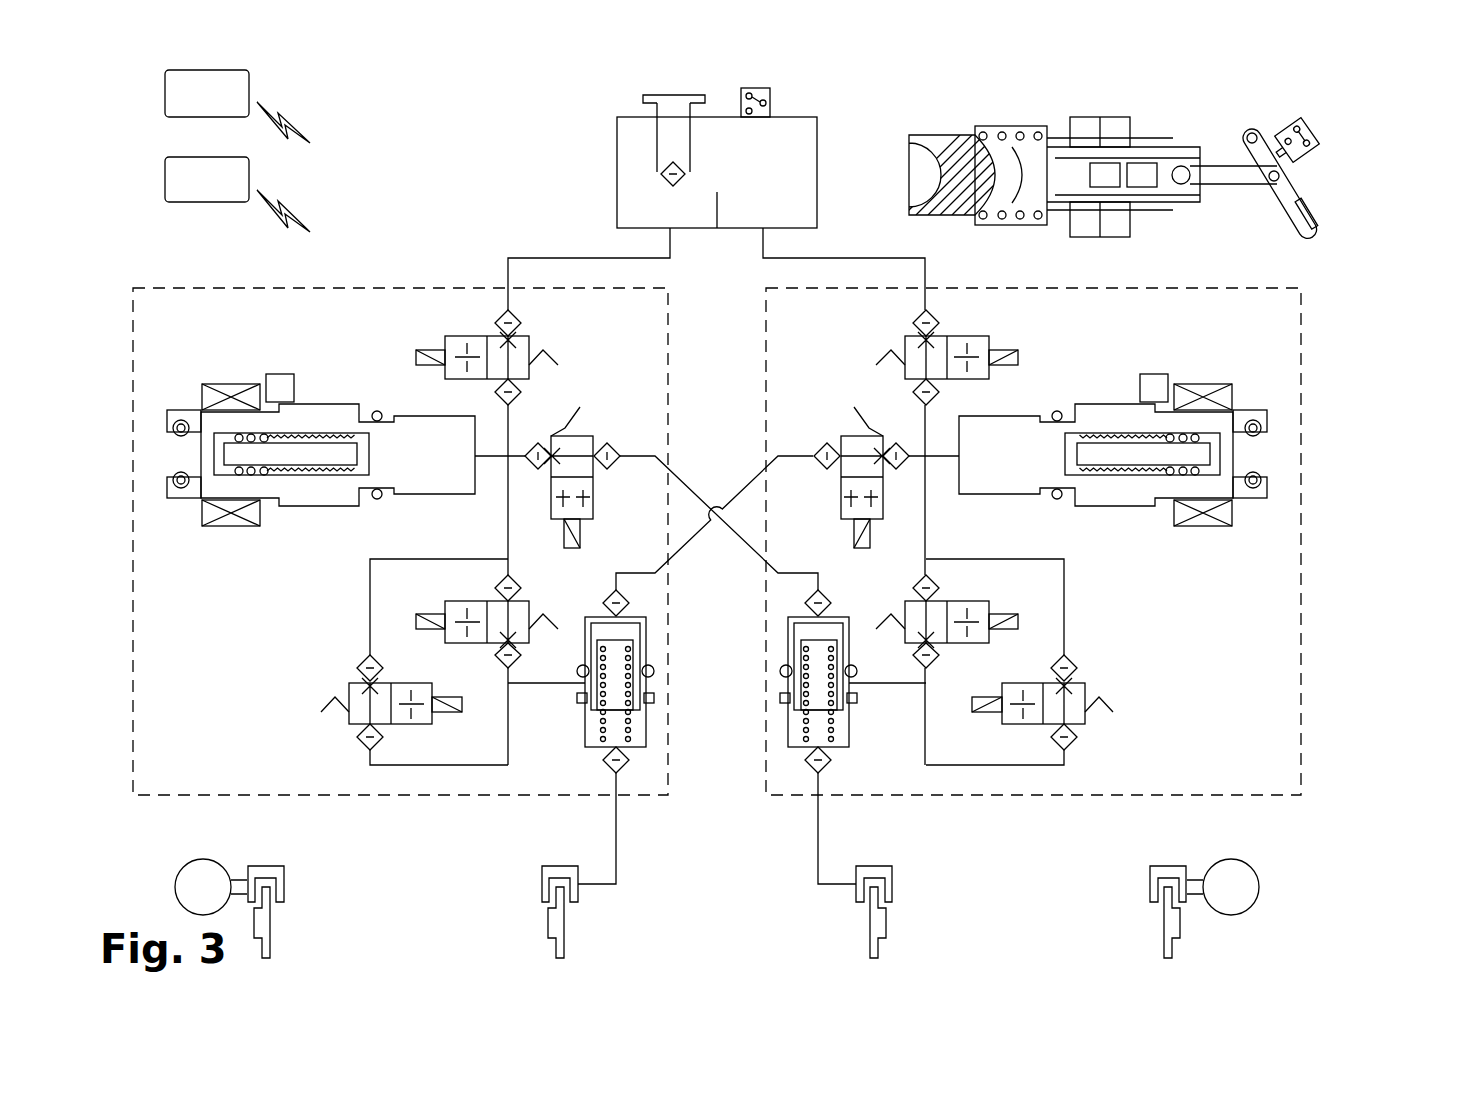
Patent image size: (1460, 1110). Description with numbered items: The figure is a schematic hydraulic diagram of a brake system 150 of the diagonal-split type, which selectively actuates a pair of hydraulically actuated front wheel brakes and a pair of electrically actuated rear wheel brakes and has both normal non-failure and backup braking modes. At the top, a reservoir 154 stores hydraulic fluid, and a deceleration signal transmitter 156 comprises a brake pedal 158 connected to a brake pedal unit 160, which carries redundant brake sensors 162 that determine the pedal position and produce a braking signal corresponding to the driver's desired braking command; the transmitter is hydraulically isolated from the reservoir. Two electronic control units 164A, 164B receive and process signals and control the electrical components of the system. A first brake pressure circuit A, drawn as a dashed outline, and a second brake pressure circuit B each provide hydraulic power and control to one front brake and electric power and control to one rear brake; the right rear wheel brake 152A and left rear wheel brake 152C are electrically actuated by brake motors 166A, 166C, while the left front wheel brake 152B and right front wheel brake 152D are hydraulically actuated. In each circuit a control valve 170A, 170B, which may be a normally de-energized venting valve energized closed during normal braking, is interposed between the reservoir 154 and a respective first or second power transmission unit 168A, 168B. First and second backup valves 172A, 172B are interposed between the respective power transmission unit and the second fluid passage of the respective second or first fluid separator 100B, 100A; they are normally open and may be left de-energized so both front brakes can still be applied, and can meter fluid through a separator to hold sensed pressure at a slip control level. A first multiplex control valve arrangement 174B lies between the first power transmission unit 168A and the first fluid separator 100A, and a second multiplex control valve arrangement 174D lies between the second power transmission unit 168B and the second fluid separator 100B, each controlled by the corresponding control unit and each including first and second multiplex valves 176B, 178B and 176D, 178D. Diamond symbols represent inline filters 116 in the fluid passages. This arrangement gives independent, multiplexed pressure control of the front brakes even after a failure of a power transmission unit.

The first fluid separator 100A is at (643, 800).
The second fluid separator 100B is at (791, 800).
The inline filter 116 is at (629, 603).
The brake system 150 is at (1162, 164).
The right rear wheel brake 152A is at (248, 866).
The left front wheel brake 152B is at (541, 878).
The left rear wheel brake 152C is at (1188, 868).
The right front wheel brake 152D is at (895, 870).
The reservoir 154 is at (803, 100).
The deceleration signal transmitter 156 is at (1056, 146).
The brake pedal 158 is at (1332, 216).
The brake pedal unit 160 is at (1220, 215).
The brake sensor 162 is at (1115, 117).
The first electronic control unit 164A is at (238, 104).
The second electronic control unit 164B is at (238, 190).
The brake motor 166A is at (178, 868).
The brake motor 166C is at (1259, 893).
The first power transmission unit 168A is at (174, 384).
The second power transmission unit 168B is at (1260, 384).
The first control valve 170A is at (530, 345).
The second control valve 170B is at (992, 345).
The first backup valve 172A is at (577, 436).
The second backup valve 172B is at (862, 436).
The first multiplex control valve arrangement 174B is at (391, 800).
The second multiplex control valve arrangement 174D is at (1060, 800).
The first multiplex valve 176B is at (530, 601).
The first multiplex valve 176D is at (957, 601).
The second multiplex valve 178B is at (395, 724).
The second multiplex valve 178D is at (1036, 683).
The first brake pressure circuit A is at (133, 503).
The second brake pressure circuit B is at (1301, 493).